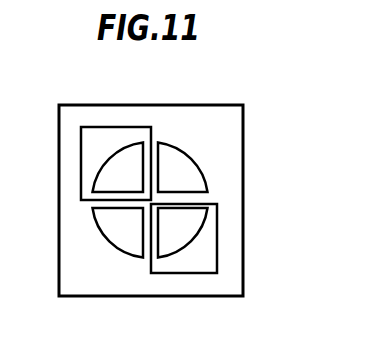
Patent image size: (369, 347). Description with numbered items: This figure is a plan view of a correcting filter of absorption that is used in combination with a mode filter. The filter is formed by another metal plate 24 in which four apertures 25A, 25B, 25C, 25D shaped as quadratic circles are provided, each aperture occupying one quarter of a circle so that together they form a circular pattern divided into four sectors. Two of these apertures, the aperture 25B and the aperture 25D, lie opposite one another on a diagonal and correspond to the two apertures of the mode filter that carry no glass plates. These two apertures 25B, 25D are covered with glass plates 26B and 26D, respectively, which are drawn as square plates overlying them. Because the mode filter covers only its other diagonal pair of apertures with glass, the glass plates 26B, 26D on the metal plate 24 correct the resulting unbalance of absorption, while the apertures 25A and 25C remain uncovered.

The metal plate 24 is at (243, 175).
The aperture 25A is at (183, 160).
The aperture 25B is at (190, 232).
The aperture 25C is at (125, 247).
The aperture 25D is at (128, 152).
The glass plate 26B is at (192, 275).
The glass plate 26D is at (80, 143).